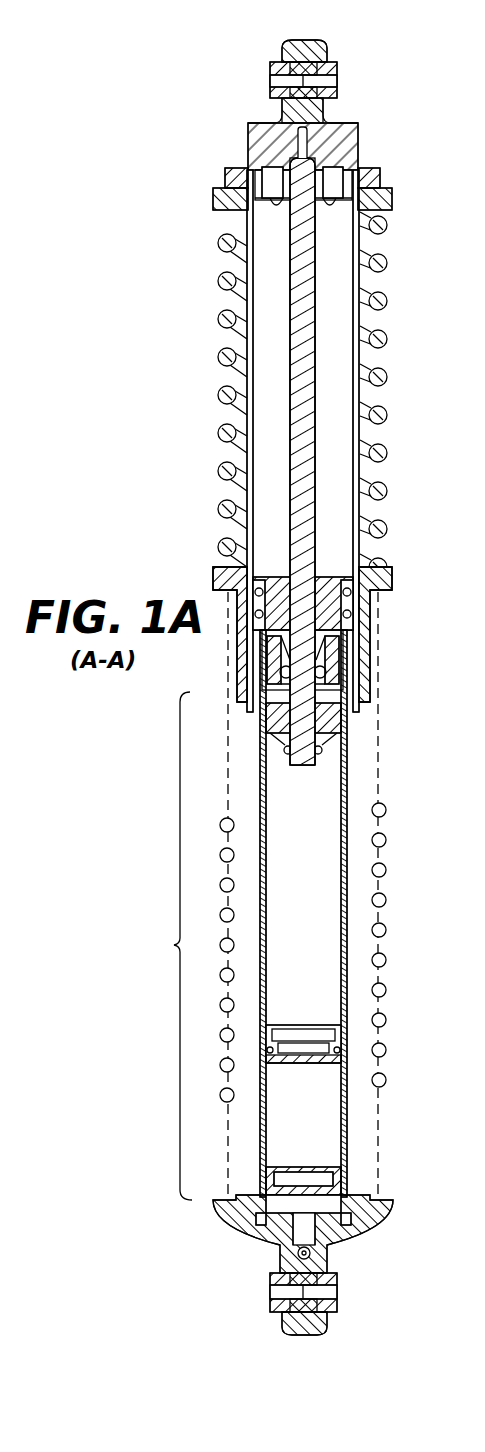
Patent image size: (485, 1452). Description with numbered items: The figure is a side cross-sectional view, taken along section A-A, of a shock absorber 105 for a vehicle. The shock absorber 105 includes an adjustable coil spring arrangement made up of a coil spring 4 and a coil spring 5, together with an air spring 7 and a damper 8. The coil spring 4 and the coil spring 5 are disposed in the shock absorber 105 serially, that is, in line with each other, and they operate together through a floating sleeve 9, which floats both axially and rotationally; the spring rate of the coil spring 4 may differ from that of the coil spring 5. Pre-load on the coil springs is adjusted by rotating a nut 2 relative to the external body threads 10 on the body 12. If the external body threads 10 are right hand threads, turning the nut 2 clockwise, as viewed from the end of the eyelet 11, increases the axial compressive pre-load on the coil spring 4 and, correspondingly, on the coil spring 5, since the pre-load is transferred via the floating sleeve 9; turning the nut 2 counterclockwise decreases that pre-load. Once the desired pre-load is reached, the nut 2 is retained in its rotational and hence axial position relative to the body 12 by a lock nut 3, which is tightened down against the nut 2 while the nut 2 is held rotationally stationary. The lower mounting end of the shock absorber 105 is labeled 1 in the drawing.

The shock absorber 105 is at (172, 82).
The eyelet 11 is at (296, 42).
The external body threads 10 is at (232, 166).
The lock nut 3 is at (382, 178).
The nut 2 is at (392, 196).
The body 12 is at (245, 500).
The air spring 7 is at (268, 390).
The coil spring 4 is at (385, 412).
The floating sleeve 9 is at (392, 578).
The damper 8 is at (178, 943).
The coil spring 5 is at (382, 932).
The lower mounting eye 1 is at (394, 1214).